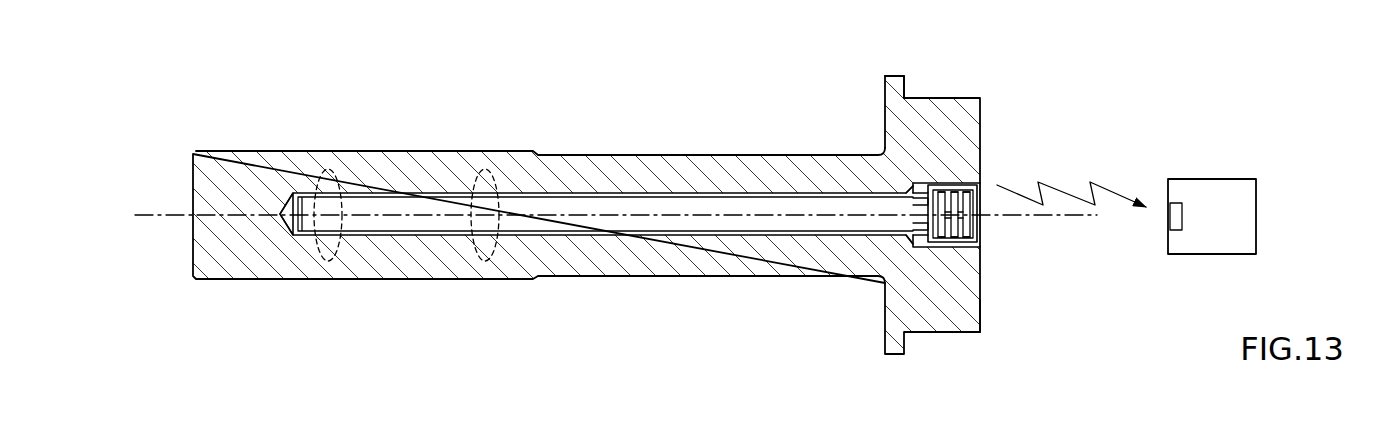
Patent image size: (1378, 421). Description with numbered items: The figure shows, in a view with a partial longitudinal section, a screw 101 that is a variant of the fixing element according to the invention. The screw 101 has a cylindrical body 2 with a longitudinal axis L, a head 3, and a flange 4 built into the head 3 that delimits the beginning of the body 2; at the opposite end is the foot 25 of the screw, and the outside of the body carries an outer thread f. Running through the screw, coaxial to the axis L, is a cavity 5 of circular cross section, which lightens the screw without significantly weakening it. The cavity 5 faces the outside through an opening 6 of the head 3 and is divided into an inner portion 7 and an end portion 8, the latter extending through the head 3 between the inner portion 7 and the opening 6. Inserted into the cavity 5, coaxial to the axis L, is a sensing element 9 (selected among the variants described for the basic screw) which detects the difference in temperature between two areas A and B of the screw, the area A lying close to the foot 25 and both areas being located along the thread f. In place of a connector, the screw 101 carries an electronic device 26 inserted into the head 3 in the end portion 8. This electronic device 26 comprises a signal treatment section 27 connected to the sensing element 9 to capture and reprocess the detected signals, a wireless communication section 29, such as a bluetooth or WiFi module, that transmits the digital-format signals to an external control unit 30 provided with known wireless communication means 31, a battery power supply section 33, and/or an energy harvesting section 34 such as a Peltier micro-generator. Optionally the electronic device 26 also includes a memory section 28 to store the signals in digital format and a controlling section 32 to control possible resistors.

The body 2 is at (588, 276).
The head 3 is at (922, 108).
The flange 4 is at (892, 78).
The cavity 5 is at (281, 198).
The opening 6 is at (982, 240).
The inner portion 7 is at (627, 200).
The end portion 8 is at (918, 243).
The sensing element 9 is at (673, 210).
The foot 25 is at (230, 246).
The electronic device 26 is at (916, 188).
The signal treatment section 27 is at (936, 184).
The memory section 28 is at (948, 184).
The wireless communication section 29 is at (975, 184).
The external control unit 30 is at (1222, 188).
The wireless communication means 31 is at (1172, 217).
The controlling section 32 is at (958, 184).
The battery power supply section 33 is at (948, 243).
The energy harvesting section 34 is at (980, 322).
The screw 101 is at (1023, 60).
The area A is at (327, 262).
The area B is at (478, 262).
The outer thread f is at (386, 151).
The longitudinal axis L is at (156, 213).